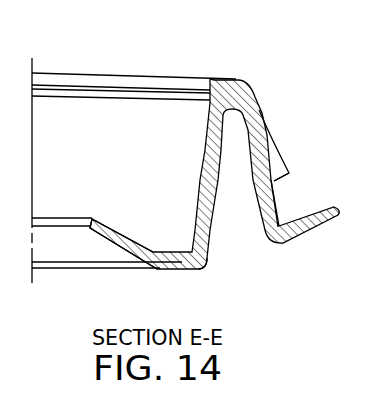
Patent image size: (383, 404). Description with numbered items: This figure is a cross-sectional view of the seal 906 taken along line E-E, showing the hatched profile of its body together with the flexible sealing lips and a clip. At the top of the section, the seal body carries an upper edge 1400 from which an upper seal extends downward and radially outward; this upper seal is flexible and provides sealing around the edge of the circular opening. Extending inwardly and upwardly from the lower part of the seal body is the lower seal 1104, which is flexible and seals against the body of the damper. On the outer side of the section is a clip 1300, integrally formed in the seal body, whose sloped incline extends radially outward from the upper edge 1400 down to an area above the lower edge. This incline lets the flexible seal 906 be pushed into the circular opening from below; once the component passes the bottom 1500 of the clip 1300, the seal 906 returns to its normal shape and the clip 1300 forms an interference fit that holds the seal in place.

The seal 906 is at (293, 63).
The upper edge 1400 is at (211, 82).
The clip 1300 is at (270, 135).
The bottom of the clip 1500 is at (288, 174).
The lower seal 1104 is at (115, 242).